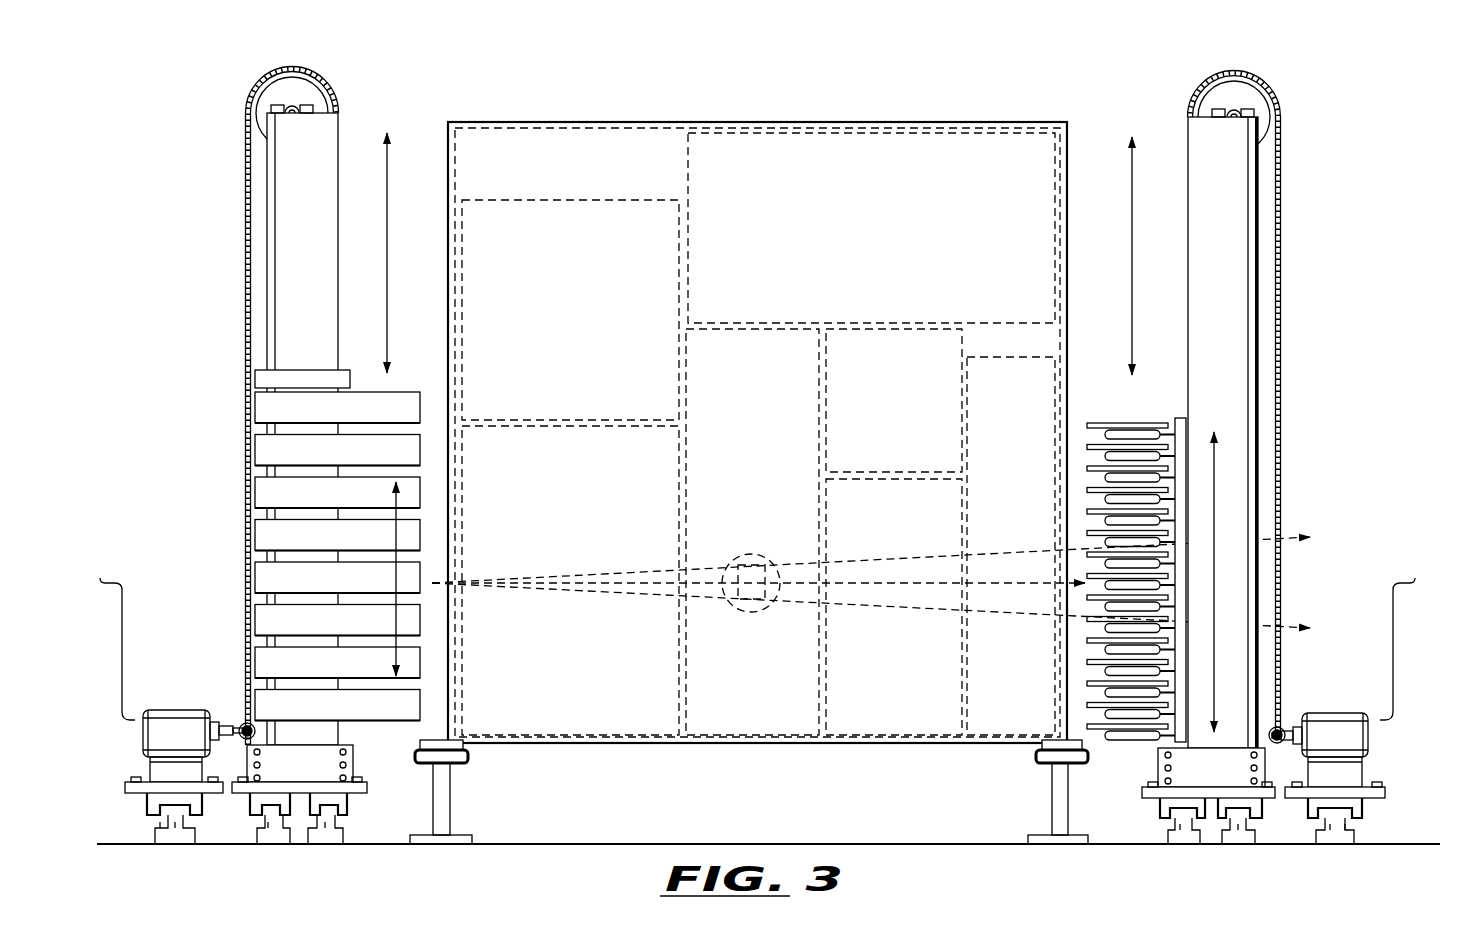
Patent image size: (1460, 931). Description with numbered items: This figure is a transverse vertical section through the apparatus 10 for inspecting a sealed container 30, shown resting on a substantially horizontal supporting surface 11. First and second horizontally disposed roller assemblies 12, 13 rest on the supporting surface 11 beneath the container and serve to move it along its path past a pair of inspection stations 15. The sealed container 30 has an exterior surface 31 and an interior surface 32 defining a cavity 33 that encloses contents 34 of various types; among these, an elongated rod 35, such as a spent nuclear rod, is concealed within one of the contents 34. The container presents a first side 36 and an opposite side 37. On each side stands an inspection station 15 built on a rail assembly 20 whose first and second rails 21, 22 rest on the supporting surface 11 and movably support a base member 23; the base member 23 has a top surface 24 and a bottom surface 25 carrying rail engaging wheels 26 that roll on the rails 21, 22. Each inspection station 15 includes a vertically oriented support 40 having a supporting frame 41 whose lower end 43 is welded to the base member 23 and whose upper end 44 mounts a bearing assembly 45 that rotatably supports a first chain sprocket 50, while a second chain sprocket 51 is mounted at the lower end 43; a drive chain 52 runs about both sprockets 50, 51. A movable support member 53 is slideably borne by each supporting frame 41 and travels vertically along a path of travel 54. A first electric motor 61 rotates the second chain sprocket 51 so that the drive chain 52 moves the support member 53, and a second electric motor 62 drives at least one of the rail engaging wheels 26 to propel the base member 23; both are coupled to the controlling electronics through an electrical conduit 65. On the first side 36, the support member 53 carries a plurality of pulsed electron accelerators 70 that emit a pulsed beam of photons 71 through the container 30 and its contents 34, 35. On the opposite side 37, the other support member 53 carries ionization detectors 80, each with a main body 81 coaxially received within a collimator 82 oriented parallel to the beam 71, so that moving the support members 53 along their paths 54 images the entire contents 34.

The apparatus for inspecting a sealed container 10 is at (1363, 105).
The supporting surface 11 is at (897, 847).
The first roller assembly 12 is at (450, 800).
The second roller assembly 13 is at (1052, 800).
The inspection station 15 is at (200, 385).
The rail assembly 20 is at (363, 853).
The first rail 21 is at (178, 838).
The second rail 22 is at (303, 847).
The base member 23 is at (122, 800).
The top surface 24 is at (145, 780).
The bottom surface 25 is at (215, 800).
The rail engaging wheels 26 is at (177, 822).
The sealed container 30 is at (1033, 103).
The exterior surface 31 is at (818, 122).
The interior surface 32 is at (653, 128).
The cavity 33 is at (522, 140).
The contents 34 is at (567, 200).
The elongated rod 35 is at (760, 552).
The first side 36 is at (447, 255).
The opposite side 37 is at (1067, 262).
The vertically oriented support 40 is at (270, 256).
The supporting frame 41 is at (290, 173).
The lower end 43 is at (307, 735).
The upper end 44 is at (755, 400).
The bearing assembly 45 is at (292, 105).
The first chain sprocket 50 is at (275, 83).
The second chain sprocket 51 is at (243, 728).
The drive chain 52 is at (753, 406).
The movable support member 53 is at (300, 370).
The path of travel 54 is at (387, 175).
The first electric motor 61 is at (1335, 730).
The second electric motor 62 is at (160, 730).
The electrical conduit 65 is at (125, 590).
The pulsed electron accelerators 70 is at (287, 463).
The pulsed beam of photons 71 is at (612, 565).
The ionization detectors 80 is at (1094, 525).
The main body 81 is at (1146, 455).
The collimator 82 is at (1088, 487).